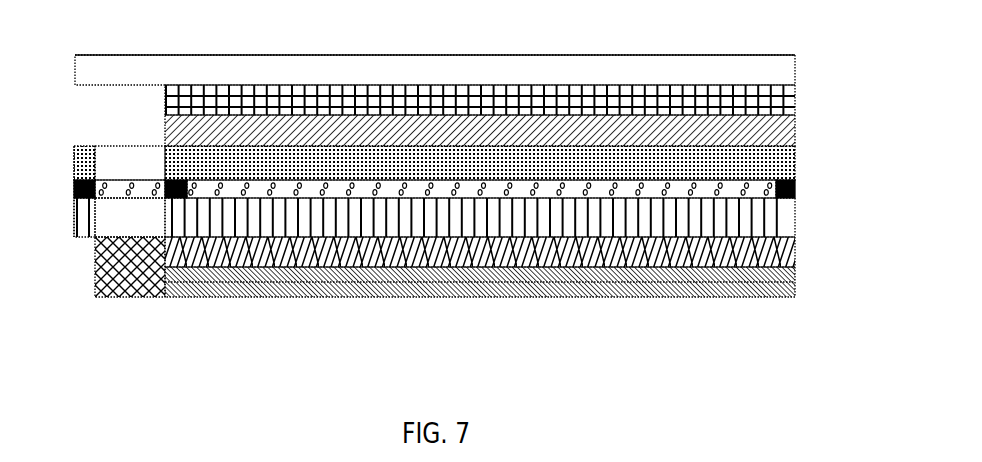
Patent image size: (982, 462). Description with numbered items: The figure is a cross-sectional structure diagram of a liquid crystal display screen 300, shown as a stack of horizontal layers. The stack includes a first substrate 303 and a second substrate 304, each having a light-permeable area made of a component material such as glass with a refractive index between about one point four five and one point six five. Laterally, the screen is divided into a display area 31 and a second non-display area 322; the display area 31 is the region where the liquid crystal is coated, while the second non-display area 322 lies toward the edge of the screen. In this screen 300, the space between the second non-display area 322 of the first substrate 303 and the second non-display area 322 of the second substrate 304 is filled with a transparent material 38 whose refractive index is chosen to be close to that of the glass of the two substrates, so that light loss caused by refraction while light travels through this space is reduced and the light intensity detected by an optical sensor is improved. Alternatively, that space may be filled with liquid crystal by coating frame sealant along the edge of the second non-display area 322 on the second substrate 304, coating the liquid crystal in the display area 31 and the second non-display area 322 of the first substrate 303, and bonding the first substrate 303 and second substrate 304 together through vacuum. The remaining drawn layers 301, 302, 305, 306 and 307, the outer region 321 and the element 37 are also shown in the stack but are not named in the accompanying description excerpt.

The liquid crystal display screen 300 is at (757, 41).
The first substrate 301 is at (795, 283).
The thin film transistor layer 302 is at (795, 238).
The first substrate 303 is at (788, 213).
The second substrate 304 is at (795, 170).
The second substrate 305 is at (795, 134).
The polarizer 306 is at (795, 102).
The cover plate 307 is at (795, 60).
The display area 31 is at (724, 299).
The non-display area 321 is at (93, 298).
The second non-display area 322 is at (163, 298).
The liquid crystal layer 37 is at (212, 182).
The transparent material 38 is at (102, 185).